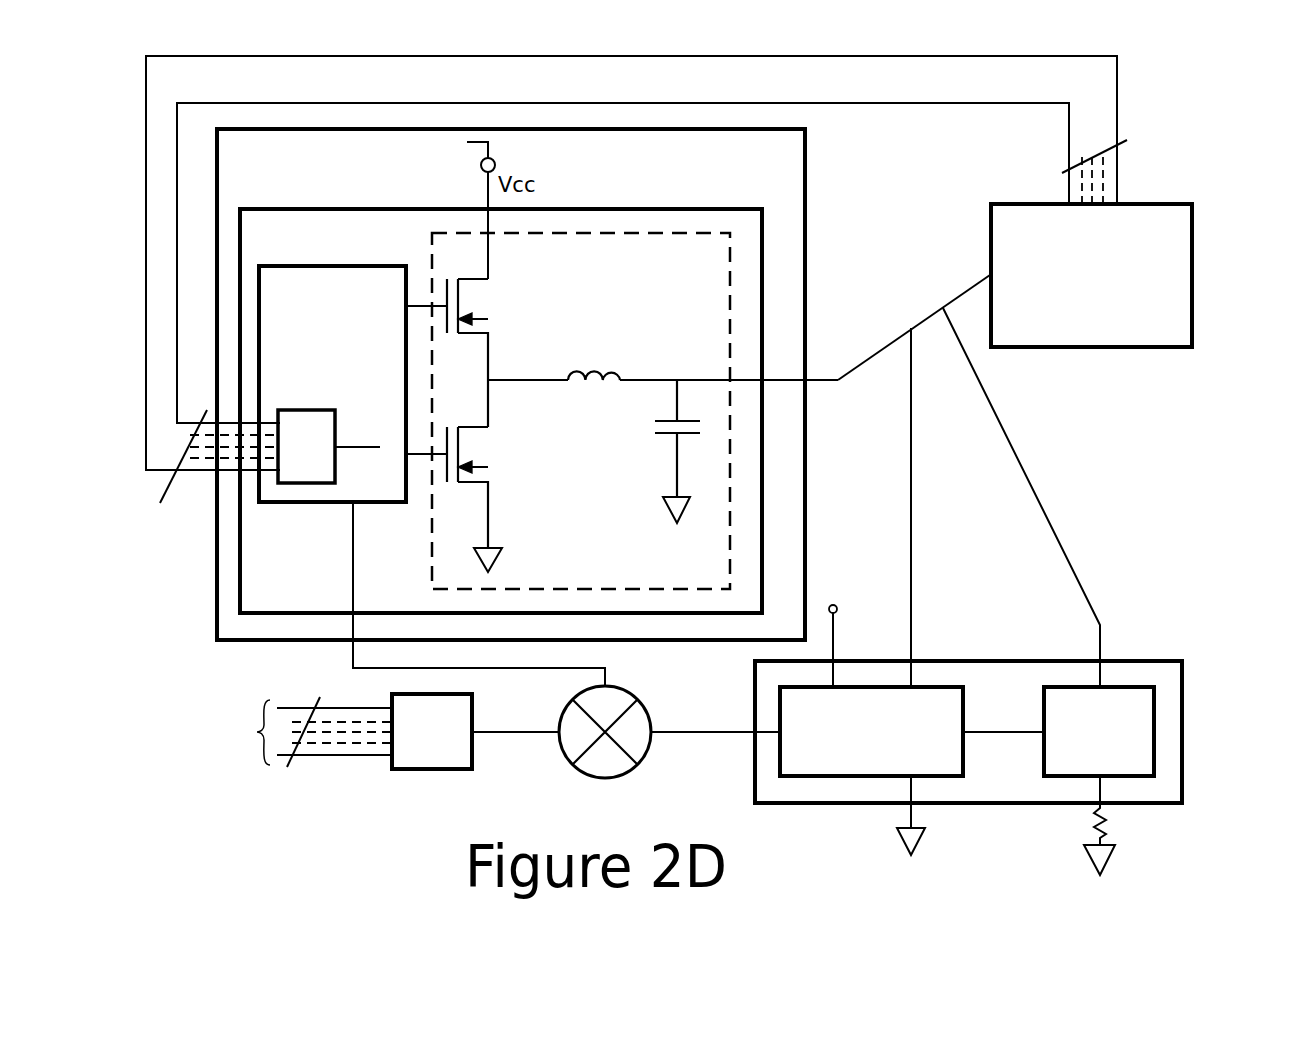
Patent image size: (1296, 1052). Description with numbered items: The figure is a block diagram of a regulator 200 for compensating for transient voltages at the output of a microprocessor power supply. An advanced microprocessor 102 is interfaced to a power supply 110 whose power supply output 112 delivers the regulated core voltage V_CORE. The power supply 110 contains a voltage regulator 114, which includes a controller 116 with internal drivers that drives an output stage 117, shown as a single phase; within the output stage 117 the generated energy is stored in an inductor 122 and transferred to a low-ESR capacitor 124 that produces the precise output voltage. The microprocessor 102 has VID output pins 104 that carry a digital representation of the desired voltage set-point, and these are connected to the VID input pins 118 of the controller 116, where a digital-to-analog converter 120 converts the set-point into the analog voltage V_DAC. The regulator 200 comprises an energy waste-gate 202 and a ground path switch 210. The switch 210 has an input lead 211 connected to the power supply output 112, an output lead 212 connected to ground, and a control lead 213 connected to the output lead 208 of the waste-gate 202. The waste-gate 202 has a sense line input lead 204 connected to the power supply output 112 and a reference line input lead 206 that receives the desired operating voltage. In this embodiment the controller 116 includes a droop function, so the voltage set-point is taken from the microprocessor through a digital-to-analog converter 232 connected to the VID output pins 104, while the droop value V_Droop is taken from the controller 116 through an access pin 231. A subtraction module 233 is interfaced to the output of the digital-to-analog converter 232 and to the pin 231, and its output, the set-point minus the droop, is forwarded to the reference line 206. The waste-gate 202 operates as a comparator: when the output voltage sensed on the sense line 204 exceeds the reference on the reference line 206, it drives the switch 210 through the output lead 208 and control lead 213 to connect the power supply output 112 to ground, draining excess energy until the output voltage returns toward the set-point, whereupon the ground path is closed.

The microprocessor 102 is at (1158, 349).
The VID output pins 104 is at (1062, 172).
The power supply 110 is at (805, 520).
The power supply output 112 is at (838, 376).
The voltage regulator 114 is at (668, 207).
The controller 116 is at (293, 264).
The output stages 117 is at (608, 589).
The VID input pins 118 is at (160, 495).
The digital-to-analog converter 120 is at (296, 485).
The inductor 122 is at (594, 357).
The capacitor 124 is at (665, 437).
The regulator 200 is at (1183, 750).
The energy waste-gate 202 is at (817, 778).
The sense line input lead 204 is at (912, 675).
The reference line input lead 206 is at (765, 735).
The output lead 208 is at (965, 730).
The ground path switch 210 is at (1157, 697).
The input lead 211 is at (1103, 672).
The output lead 212 is at (1105, 796).
The control lead 213 is at (1043, 740).
The access pin 231 is at (356, 543).
The digital-to-analog converter 232 is at (400, 770).
The subtraction module 233 is at (637, 691).